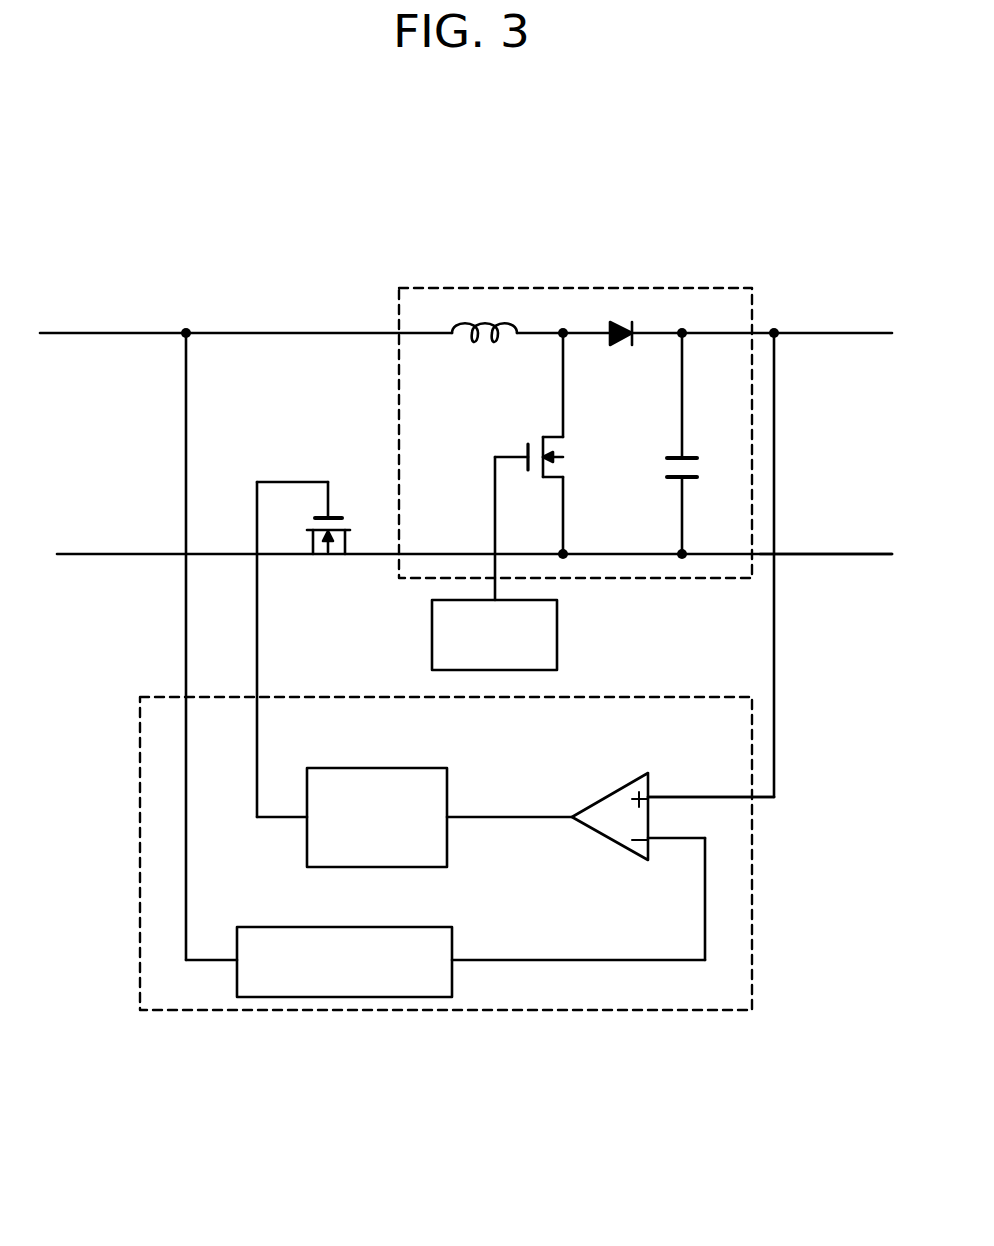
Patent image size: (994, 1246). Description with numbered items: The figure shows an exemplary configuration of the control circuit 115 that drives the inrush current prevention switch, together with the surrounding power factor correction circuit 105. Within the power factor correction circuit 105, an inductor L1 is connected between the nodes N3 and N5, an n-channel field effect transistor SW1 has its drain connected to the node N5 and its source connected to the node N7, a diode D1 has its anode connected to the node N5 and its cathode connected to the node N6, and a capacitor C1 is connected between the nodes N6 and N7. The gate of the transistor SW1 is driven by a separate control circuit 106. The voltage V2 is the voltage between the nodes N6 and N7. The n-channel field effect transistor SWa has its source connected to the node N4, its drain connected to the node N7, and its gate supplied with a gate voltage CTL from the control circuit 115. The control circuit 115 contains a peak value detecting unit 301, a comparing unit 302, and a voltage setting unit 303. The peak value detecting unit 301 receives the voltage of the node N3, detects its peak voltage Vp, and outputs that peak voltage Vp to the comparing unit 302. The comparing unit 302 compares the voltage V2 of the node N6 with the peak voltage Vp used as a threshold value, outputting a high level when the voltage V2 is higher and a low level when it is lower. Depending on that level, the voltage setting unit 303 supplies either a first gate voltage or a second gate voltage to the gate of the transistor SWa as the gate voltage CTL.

The node N3 is at (87, 332).
The node N4 is at (111, 553).
The node N5 is at (563, 328).
The node N6 is at (837, 332).
The node N7 is at (837, 553).
The power factor correction circuit 105 is at (661, 288).
The inductor L1 is at (483, 340).
The diode D1 is at (617, 348).
The n-channel field effect transistor SW1 is at (563, 445).
The capacitor C1 is at (697, 468).
The gate voltage CTL is at (296, 480).
The n-channel field effect transistor SWa is at (337, 548).
The control circuit 106 is at (557, 633).
The control circuit 115 is at (140, 838).
The comparing unit 302 is at (596, 800).
The voltage setting unit 303 is at (362, 868).
The peak value detecting unit 301 is at (333, 997).
The voltage V2 is at (703, 795).
The peak voltage Vp is at (705, 878).